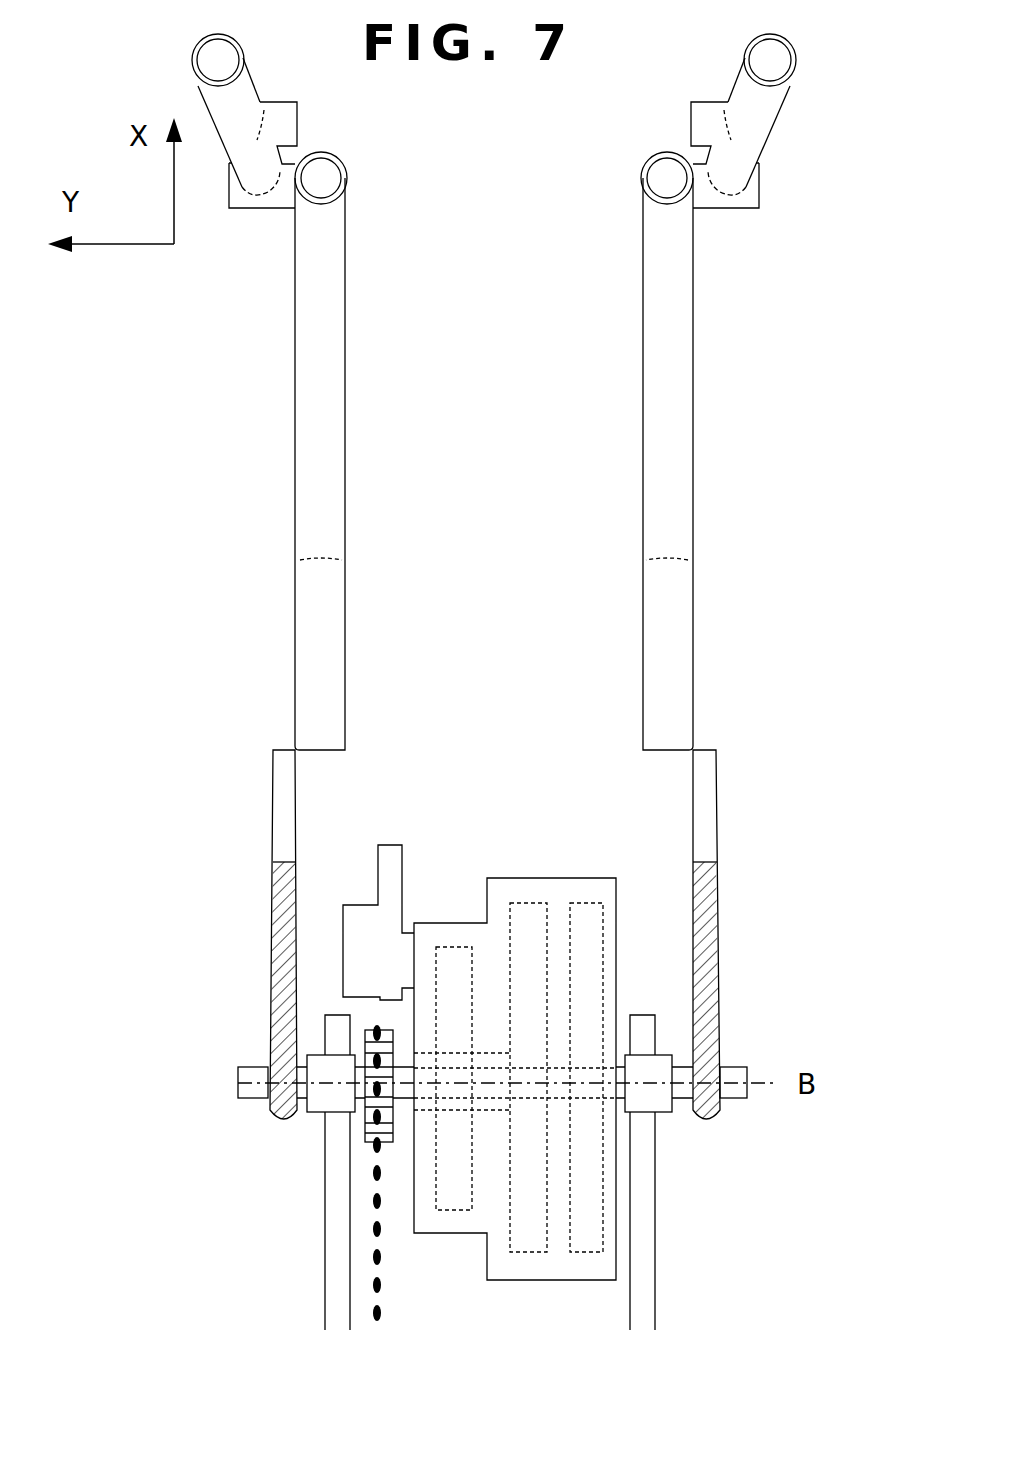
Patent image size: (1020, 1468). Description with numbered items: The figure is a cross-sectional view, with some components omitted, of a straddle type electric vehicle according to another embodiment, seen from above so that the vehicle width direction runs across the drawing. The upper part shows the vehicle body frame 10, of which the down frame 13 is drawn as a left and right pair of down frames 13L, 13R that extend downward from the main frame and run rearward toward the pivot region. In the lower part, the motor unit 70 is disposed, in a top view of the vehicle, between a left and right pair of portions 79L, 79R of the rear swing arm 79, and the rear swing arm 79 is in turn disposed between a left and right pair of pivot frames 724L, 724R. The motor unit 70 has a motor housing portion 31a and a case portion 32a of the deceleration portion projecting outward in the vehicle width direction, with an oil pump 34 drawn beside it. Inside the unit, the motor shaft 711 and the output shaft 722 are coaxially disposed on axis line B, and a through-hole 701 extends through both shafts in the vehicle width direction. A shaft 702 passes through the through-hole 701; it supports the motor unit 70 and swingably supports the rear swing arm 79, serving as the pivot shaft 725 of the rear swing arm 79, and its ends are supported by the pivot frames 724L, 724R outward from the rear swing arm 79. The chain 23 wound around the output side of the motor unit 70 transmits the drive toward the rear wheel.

The vehicle body frame 10 is at (836, 166).
The down frame 13 is at (272, 344).
The left down frame 13L is at (302, 411).
The right down frame 13R is at (698, 351).
The chain 23 is at (377, 1285).
The motor housing portion 31a is at (570, 1280).
The case portion 32a is at (460, 1233).
The oil pump 34 is at (378, 870).
The motor unit 70 is at (450, 872).
The through-hole 701 is at (487, 1053).
The shaft 702 is at (685, 1100).
The motor shaft 711 is at (487, 1110).
The output shaft 722 is at (403, 1115).
The left pivot frame 724L is at (270, 965).
The right pivot frame 724R is at (722, 1022).
The pivot shaft 725 is at (240, 1070).
The rear swing arm 79 is at (278, 1172).
The left portion of rear swing arm 79L is at (325, 1235).
The right portion of rear swing arm 79R is at (655, 1225).